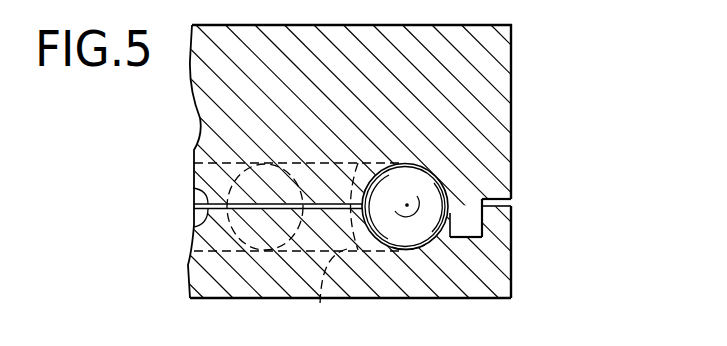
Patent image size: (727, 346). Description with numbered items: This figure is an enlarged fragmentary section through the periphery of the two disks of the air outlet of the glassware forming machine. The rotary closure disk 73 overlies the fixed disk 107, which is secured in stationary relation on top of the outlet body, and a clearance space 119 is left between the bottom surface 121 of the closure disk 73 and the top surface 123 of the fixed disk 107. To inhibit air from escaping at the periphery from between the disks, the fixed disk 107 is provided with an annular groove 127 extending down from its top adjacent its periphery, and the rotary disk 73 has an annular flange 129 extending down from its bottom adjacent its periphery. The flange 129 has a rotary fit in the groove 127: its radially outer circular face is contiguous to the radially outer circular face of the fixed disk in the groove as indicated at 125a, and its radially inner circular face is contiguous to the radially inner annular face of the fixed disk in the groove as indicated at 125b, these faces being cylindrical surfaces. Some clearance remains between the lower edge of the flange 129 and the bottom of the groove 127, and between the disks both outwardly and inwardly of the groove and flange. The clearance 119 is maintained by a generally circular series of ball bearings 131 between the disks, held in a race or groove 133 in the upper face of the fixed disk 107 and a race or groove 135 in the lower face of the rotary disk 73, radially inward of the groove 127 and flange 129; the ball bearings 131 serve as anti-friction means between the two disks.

The closure disk 73 is at (512, 88).
The fixed disk 107 is at (512, 294).
The clearance space 119 is at (195, 206).
The bottom surface 121 is at (200, 197).
The top surface 123 is at (197, 238).
The radially outer circular face 125a is at (472, 218).
The radially inner circular face 125b is at (420, 250).
The annular groove 127 is at (478, 240).
The annular flange 129 is at (484, 211).
The ball bearings 131 is at (440, 195).
The race or groove 133 is at (320, 305).
The race or groove 135 is at (412, 163).